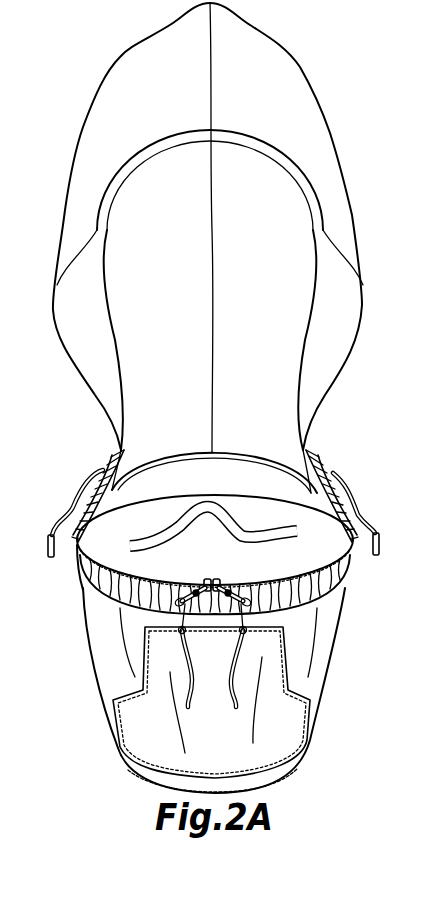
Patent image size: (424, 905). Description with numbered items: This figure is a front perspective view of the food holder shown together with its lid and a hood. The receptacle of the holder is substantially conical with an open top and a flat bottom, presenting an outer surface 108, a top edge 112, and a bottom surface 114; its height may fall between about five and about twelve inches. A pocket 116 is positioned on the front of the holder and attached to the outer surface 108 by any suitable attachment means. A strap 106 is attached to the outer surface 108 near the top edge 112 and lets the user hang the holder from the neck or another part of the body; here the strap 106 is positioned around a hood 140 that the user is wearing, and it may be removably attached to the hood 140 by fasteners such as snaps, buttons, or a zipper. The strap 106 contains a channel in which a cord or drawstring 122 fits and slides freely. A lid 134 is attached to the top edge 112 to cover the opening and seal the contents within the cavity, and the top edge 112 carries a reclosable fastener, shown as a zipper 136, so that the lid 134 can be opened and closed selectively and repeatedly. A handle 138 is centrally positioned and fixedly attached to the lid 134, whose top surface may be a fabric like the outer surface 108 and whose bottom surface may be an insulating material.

The hood 140 is at (290, 72).
The handle 138 is at (203, 510).
The strap 106 is at (325, 455).
The lid 134 is at (328, 535).
The top edge 112 is at (87, 587).
The zipper 136 is at (207, 583).
The drawstring 122 is at (230, 652).
The outer surface 108 is at (320, 688).
The pocket 116 is at (287, 738).
The bottom surface 114 is at (282, 782).